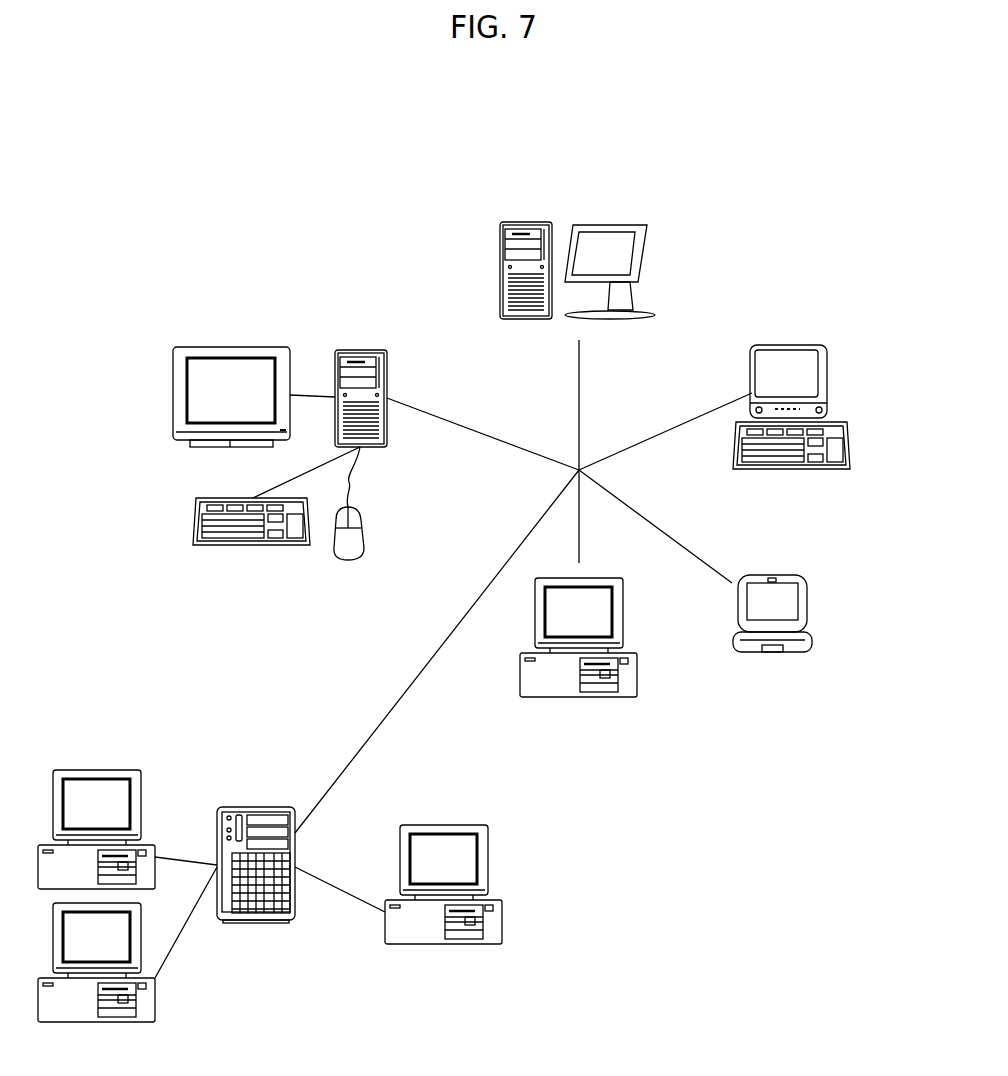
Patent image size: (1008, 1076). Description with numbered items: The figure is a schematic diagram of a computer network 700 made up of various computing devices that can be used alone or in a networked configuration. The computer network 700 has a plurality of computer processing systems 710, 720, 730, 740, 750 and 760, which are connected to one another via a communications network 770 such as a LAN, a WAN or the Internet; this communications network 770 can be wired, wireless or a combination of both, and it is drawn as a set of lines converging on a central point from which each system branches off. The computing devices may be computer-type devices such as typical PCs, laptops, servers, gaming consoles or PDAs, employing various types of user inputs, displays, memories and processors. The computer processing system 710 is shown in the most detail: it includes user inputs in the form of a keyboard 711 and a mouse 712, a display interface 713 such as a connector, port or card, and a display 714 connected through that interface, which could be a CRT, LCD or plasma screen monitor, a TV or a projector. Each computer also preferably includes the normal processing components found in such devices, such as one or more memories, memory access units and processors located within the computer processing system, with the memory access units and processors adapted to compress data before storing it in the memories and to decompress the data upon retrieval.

The computer network 700 is at (321, 131).
The computer processing system 710 is at (281, 415).
The keyboard 711 is at (193, 522).
The mouse 712 is at (373, 520).
The display interface 713 is at (336, 395).
The display 714 is at (177, 370).
The computer processing system 720 is at (577, 240).
The computer processing system 730 is at (824, 407).
The computer processing system 740 is at (805, 613).
The computer processing system 750 is at (578, 664).
The computer processing system 760 is at (270, 867).
The communications network 770 is at (523, 586).